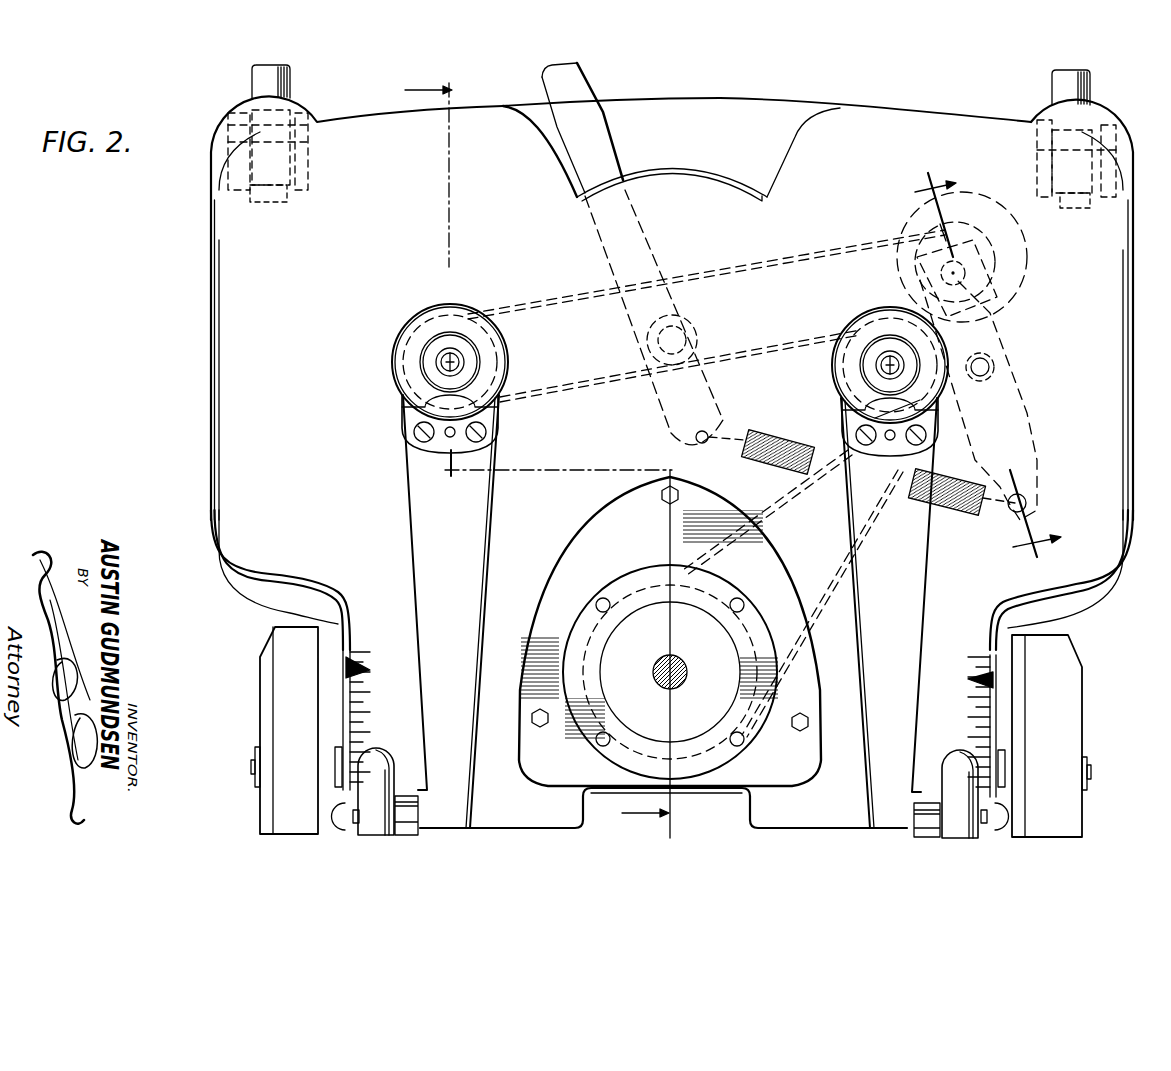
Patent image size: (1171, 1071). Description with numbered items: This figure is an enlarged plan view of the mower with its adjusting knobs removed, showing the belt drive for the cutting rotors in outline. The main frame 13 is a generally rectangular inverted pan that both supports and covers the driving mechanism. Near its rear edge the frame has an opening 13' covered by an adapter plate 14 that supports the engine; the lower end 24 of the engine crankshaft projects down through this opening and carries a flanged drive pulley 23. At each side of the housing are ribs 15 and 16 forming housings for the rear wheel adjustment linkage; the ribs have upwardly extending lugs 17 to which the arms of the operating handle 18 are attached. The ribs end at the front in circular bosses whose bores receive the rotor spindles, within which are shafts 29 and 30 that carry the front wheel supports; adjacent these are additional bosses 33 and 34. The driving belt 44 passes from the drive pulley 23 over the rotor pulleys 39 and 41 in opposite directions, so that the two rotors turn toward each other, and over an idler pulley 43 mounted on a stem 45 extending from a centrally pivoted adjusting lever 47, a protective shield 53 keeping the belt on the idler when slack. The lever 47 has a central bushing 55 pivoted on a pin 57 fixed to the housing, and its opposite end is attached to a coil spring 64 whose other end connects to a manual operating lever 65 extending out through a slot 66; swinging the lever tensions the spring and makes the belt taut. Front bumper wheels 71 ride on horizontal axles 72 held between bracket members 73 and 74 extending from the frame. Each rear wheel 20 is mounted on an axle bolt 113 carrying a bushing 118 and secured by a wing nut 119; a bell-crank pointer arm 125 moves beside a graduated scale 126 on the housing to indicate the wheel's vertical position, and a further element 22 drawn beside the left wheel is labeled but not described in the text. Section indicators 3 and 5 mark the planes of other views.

The main frame 13 is at (691, 463).
The opening 13' is at (751, 610).
The adapter plate 14 is at (798, 770).
The rib 15 is at (905, 646).
The rib 16 is at (480, 602).
The lug 17 is at (410, 803).
The operating handle 18 is at (380, 760).
The rear wheel 20 is at (285, 672).
The scale 22 is at (364, 672).
The flanged drive pulley 23 is at (718, 598).
The lower end of the crankshaft 24 is at (678, 683).
The shaft 29 is at (878, 366).
The shaft 30 is at (460, 362).
The boss 33 is at (880, 447).
The boss 34 is at (455, 475).
The pulley 39 is at (845, 330).
The pulley 41 is at (480, 312).
The idler pulley 43 is at (905, 287).
The driving belt 44 is at (782, 252).
The stem 45 is at (1020, 259).
The adjusting lever 47 is at (1030, 448).
The protective shield 53 is at (985, 211).
The central bushing 55 is at (994, 373).
The pin 57 is at (992, 358).
The coil spring 64 is at (962, 520).
The manual operating lever 65 is at (652, 252).
The slot 66 is at (726, 181).
The front bumper wheel 71 is at (284, 80).
The horizontal axle 72 is at (226, 128).
The bracket member 73 is at (237, 114).
The bracket member 74 is at (312, 113).
The axle bolt 113 is at (256, 772).
The bushing 118 is at (335, 762).
The wing nut 119 is at (258, 747).
The indicating pointer arm 125 is at (990, 655).
The graduated scale 126 is at (972, 703).
The section line 3- 3 is at (995, 365).
The section line 5- 5 is at (546, 459).